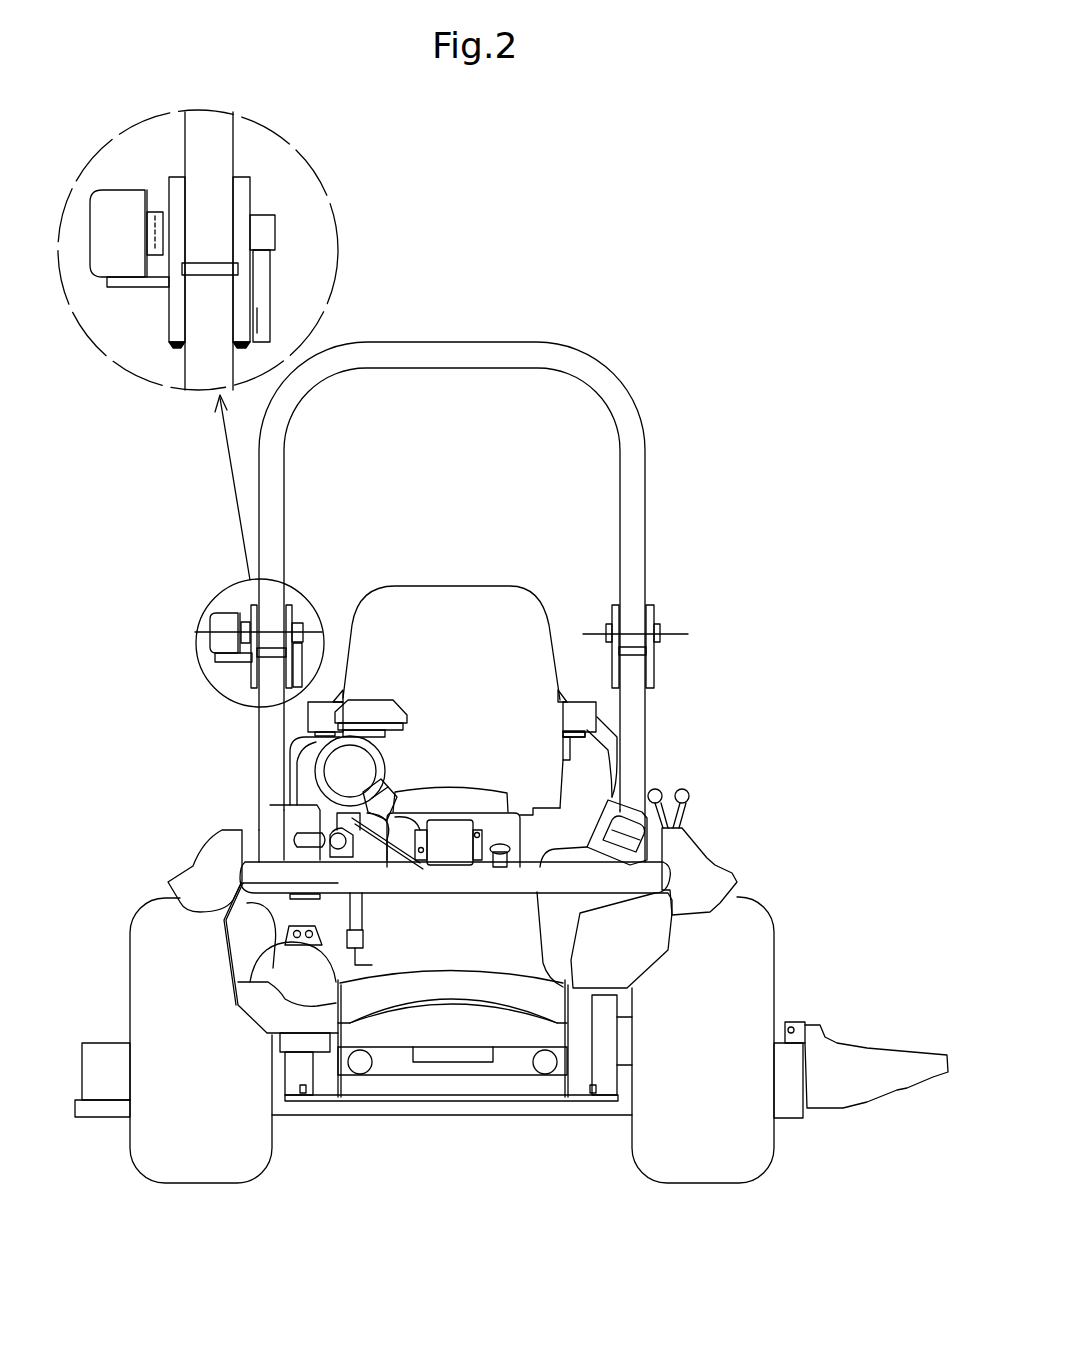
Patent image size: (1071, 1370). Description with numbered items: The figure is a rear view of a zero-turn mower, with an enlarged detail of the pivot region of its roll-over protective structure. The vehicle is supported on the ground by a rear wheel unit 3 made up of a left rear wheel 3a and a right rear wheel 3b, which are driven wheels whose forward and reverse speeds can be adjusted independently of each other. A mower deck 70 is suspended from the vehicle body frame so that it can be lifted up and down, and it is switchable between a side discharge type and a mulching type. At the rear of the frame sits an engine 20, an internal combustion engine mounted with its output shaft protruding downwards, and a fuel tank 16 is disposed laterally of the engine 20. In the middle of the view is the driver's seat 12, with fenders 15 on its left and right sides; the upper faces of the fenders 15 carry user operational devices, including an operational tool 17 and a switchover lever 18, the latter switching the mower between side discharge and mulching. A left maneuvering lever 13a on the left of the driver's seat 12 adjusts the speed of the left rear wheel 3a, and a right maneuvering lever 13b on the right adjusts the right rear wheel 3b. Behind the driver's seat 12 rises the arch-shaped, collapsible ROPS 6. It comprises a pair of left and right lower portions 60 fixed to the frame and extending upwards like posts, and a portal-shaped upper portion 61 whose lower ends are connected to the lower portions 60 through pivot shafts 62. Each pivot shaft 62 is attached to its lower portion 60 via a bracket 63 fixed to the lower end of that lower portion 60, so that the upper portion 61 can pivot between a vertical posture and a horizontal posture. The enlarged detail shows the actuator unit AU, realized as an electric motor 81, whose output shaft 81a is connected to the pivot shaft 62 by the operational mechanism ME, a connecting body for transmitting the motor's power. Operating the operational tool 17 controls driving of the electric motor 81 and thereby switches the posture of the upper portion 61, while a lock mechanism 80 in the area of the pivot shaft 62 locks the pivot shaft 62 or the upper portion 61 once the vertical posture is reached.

The rear wheel unit 3 is at (452, 1080).
The left rear wheel 3a is at (197, 1165).
The right rear wheel 3b is at (697, 1160).
The ROPS 6 is at (648, 503).
The driver's seat 12 is at (448, 605).
The left maneuvering lever 13a is at (335, 695).
The right maneuvering lever 13b is at (567, 698).
The fender 15 is at (200, 878).
The fuel tank 16 is at (563, 925).
The operational tool 17 is at (684, 797).
The switchover lever 18 is at (660, 795).
The engine 20 is at (455, 792).
The lower portion 60 is at (200, 358).
The upper portion 61 is at (208, 150).
The pivot shaft 62 is at (265, 230).
The bracket 63 is at (253, 195).
The mower deck 70 is at (110, 1122).
The lock mechanism 80 is at (262, 277).
The electric motor 81 is at (103, 226).
The output shaft 81a is at (146, 212).
The actuator unit AU is at (118, 172).
The operational mechanism ME is at (157, 212).